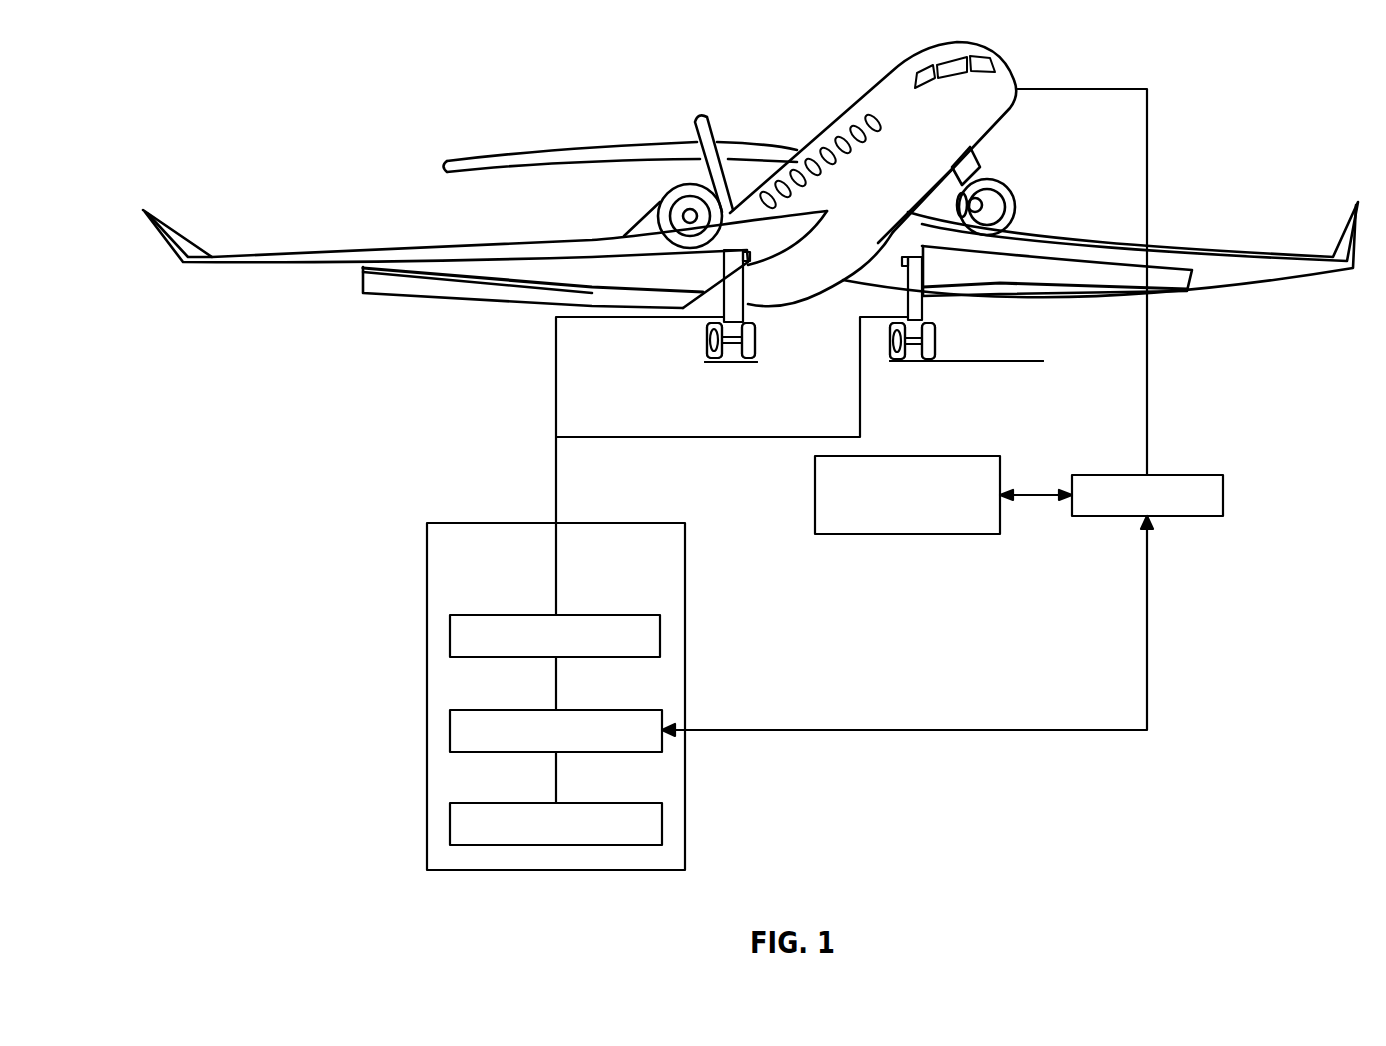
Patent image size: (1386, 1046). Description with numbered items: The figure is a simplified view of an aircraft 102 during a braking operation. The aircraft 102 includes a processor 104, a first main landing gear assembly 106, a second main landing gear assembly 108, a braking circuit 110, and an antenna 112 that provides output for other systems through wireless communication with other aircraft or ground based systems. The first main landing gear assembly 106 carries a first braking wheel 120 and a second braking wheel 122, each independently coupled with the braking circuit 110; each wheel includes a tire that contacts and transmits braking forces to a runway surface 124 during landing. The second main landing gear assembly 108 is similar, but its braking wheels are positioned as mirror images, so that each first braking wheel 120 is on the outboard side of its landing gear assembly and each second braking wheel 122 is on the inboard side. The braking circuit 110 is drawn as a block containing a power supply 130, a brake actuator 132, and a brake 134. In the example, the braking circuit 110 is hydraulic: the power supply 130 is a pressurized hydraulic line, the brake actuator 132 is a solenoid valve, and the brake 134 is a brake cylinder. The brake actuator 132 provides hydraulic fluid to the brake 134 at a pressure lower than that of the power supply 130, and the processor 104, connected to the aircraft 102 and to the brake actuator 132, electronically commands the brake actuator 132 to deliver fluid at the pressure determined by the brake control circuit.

The aircraft 102 is at (889, 74).
The processor 104 is at (1179, 475).
The first main landing gear assembly 106 is at (710, 367).
The second main landing gear assembly 108 is at (892, 367).
The braking circuit 110 is at (556, 680).
The antenna 112 is at (929, 456).
The first braking wheel 120 is at (707, 343).
The second braking wheel 122 is at (893, 357).
The runway surface 124 is at (707, 362).
The power supply 130 is at (520, 615).
The brake actuator 132 is at (522, 710).
The brake 134 is at (522, 803).